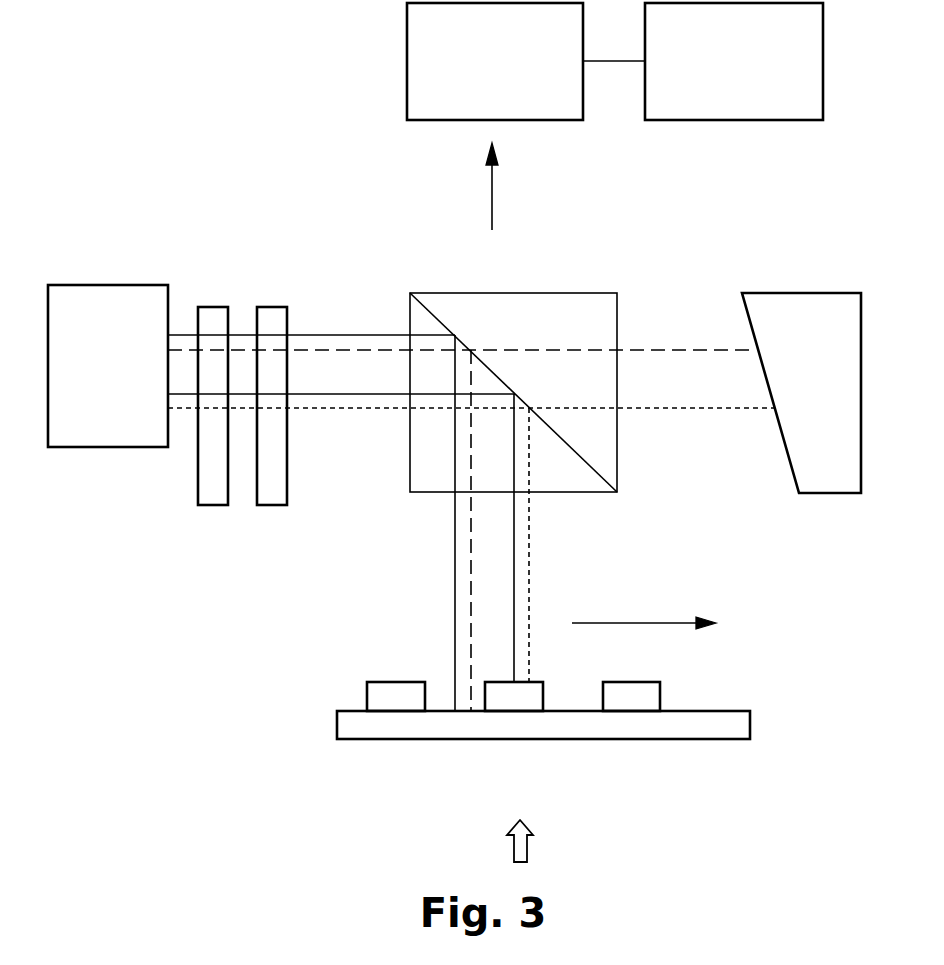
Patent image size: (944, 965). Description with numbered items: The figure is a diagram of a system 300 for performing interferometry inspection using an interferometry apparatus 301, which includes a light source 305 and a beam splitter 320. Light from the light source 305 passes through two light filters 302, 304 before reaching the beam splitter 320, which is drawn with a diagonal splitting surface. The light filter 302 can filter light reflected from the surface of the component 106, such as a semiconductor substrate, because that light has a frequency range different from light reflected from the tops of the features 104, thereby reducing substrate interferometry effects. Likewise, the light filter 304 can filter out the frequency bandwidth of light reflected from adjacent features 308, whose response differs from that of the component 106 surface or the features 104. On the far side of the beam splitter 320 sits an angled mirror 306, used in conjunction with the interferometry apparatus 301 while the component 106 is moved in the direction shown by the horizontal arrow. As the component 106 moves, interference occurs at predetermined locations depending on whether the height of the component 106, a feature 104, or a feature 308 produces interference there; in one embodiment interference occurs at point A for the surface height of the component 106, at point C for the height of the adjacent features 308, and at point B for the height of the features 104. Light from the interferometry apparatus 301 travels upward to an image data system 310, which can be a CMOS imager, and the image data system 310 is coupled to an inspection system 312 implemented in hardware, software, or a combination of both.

The image data system 310 is at (478, 103).
The inspection system 312 is at (717, 103).
The interferometry apparatus 301 is at (318, 221).
The light source 305 is at (125, 383).
The light filter 302 is at (210, 423).
The light filter 304 is at (270, 423).
The beam splitter 320 is at (568, 321).
The angled mirror 306 is at (798, 406).
The component 106 is at (543, 725).
The features 104 is at (455, 696).
The adjacent features 308 is at (631, 696).
The system 300 is at (500, 841).